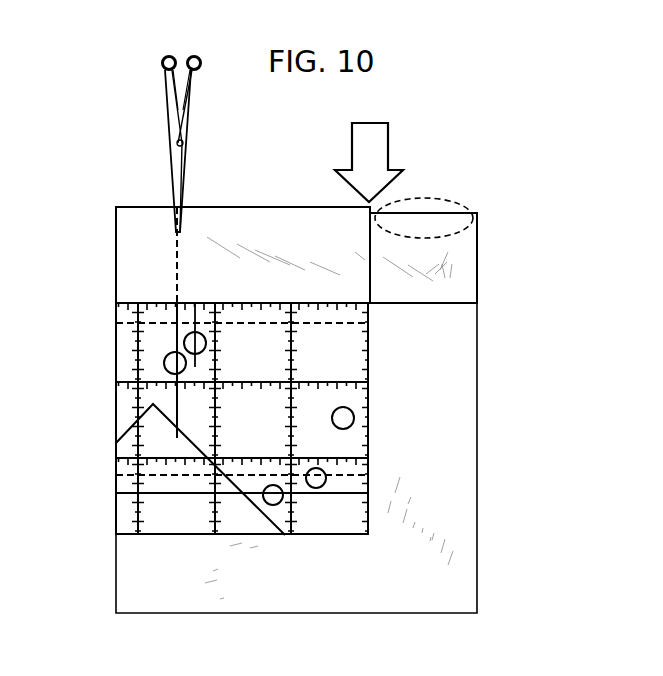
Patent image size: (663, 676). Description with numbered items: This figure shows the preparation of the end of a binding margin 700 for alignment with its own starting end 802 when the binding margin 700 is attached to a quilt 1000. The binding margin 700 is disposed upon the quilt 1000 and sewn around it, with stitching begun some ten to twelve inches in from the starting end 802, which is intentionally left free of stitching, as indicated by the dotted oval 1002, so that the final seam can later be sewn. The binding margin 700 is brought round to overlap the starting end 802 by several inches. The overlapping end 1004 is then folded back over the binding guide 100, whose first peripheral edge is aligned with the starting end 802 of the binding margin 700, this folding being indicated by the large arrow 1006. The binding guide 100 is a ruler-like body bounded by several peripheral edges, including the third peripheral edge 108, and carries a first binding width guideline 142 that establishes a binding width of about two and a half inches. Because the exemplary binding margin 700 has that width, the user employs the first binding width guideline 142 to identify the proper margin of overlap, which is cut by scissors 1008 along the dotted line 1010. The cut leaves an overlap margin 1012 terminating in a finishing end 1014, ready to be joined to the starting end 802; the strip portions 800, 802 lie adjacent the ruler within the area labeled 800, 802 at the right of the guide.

The binding guide 100 is at (204, 449).
The third peripheral edge 108 is at (325, 539).
The first binding width guideline 142 is at (170, 347).
The binding margin 700 is at (476, 257).
The fabric panel 800 is at (423, 275).
The starting end 802 is at (374, 284).
The quilt 1000 is at (296, 410).
The dotted oval 1002 is at (436, 207).
The overlapping end 1004 is at (218, 255).
The large arrow 1006 is at (369, 162).
The scissors 1008 is at (166, 90).
The dotted line 1010 is at (176, 262).
The overlap margin 1012 is at (286, 246).
The finishing end 1014 is at (182, 289).